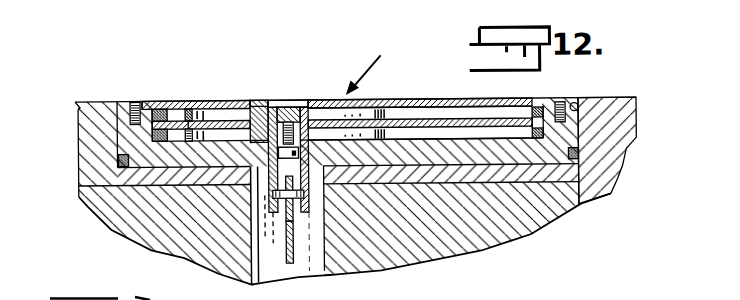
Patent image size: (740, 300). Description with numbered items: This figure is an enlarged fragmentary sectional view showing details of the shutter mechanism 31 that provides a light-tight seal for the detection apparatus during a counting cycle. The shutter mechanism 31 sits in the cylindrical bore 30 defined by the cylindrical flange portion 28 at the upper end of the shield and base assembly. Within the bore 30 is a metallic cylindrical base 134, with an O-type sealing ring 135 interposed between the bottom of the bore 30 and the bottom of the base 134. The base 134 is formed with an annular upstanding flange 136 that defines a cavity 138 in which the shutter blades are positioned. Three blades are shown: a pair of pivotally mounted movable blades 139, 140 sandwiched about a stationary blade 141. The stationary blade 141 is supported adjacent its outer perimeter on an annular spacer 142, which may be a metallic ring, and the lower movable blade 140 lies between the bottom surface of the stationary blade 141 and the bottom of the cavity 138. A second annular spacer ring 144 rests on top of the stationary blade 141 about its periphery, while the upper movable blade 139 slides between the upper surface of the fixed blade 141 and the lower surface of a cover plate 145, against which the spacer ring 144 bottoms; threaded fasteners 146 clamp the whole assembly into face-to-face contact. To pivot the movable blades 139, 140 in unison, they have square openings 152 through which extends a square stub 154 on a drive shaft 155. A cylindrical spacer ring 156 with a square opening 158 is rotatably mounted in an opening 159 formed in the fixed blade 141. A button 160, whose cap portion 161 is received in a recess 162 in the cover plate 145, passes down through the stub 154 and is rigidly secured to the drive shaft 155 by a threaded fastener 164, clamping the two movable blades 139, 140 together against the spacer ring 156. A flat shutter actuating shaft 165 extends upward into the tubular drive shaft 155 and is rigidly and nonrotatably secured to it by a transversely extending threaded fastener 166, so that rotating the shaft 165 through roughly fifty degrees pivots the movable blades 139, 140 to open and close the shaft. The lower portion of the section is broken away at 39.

The cylindrical flange portion 28 is at (618, 161).
The cylindrical bore 30 is at (580, 106).
The shutter mechanism 31 is at (373, 64).
The lower surface of base 39 is at (498, 242).
The cylindrical base 134 is at (433, 151).
The O-type sealing ring 135 is at (580, 190).
The annular upstanding flange 136 is at (546, 113).
The cavity 138 is at (418, 115).
The upper movable blade 139 is at (212, 106).
The lower movable blade 140 is at (215, 86).
The stationary blade 141 is at (153, 127).
The annular spacer 142 is at (166, 112).
The second annular spacer ring 144 is at (175, 107).
The cover plate 145 is at (390, 104).
The threaded fasteners 146 is at (562, 104).
The square openings 152 is at (307, 91).
The square stub 154 is at (308, 105).
The drive shaft 155 is at (292, 223).
The cylindrical spacer ring 156 is at (307, 130).
The square opening 158 is at (298, 154).
The opening 159 is at (248, 172).
The button 160 is at (300, 104).
The cap portion 161 is at (272, 104).
The recess 162 is at (258, 103).
The threaded fastener 164 is at (315, 194).
The shutter actuating shaft 165 is at (297, 277).
The threaded fastener 166 is at (290, 242).